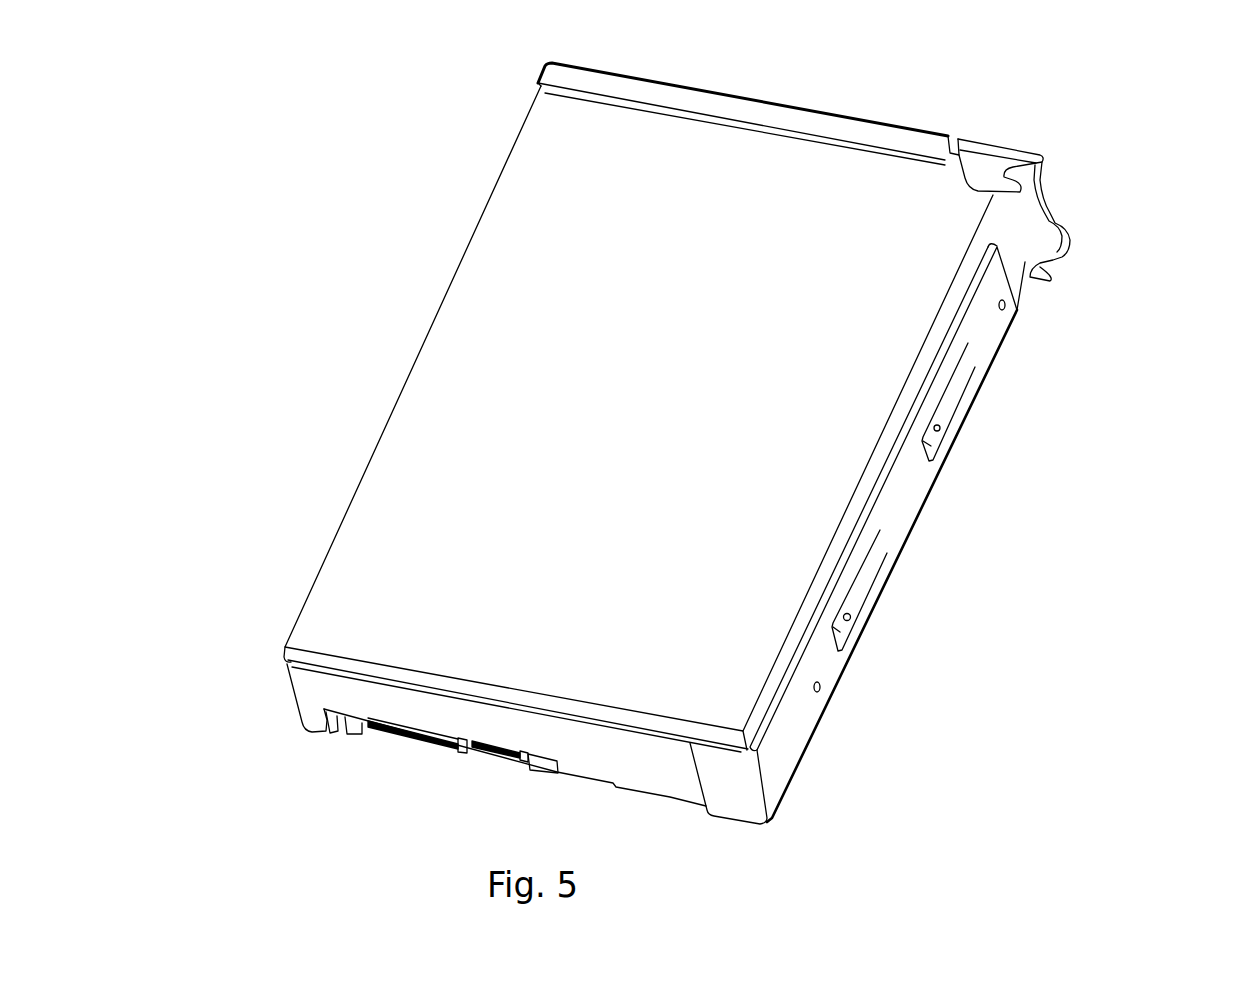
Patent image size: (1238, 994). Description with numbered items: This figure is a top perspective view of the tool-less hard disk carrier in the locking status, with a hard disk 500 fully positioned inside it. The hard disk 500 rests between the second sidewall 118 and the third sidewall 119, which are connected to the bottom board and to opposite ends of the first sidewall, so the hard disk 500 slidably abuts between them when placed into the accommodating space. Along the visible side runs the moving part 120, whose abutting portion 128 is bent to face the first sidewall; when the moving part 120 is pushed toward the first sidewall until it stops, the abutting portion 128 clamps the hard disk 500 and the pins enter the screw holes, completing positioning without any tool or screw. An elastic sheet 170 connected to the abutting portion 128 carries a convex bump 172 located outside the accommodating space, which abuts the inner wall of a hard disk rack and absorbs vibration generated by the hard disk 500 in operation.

The hard disk 500 is at (487, 333).
The second sidewall 118 is at (793, 117).
The moving part 120 is at (985, 328).
The abutting portion 128 is at (897, 502).
The elastic sheet 170 is at (863, 578).
The convex bump 172 is at (852, 618).
The third sidewall 119 is at (403, 702).